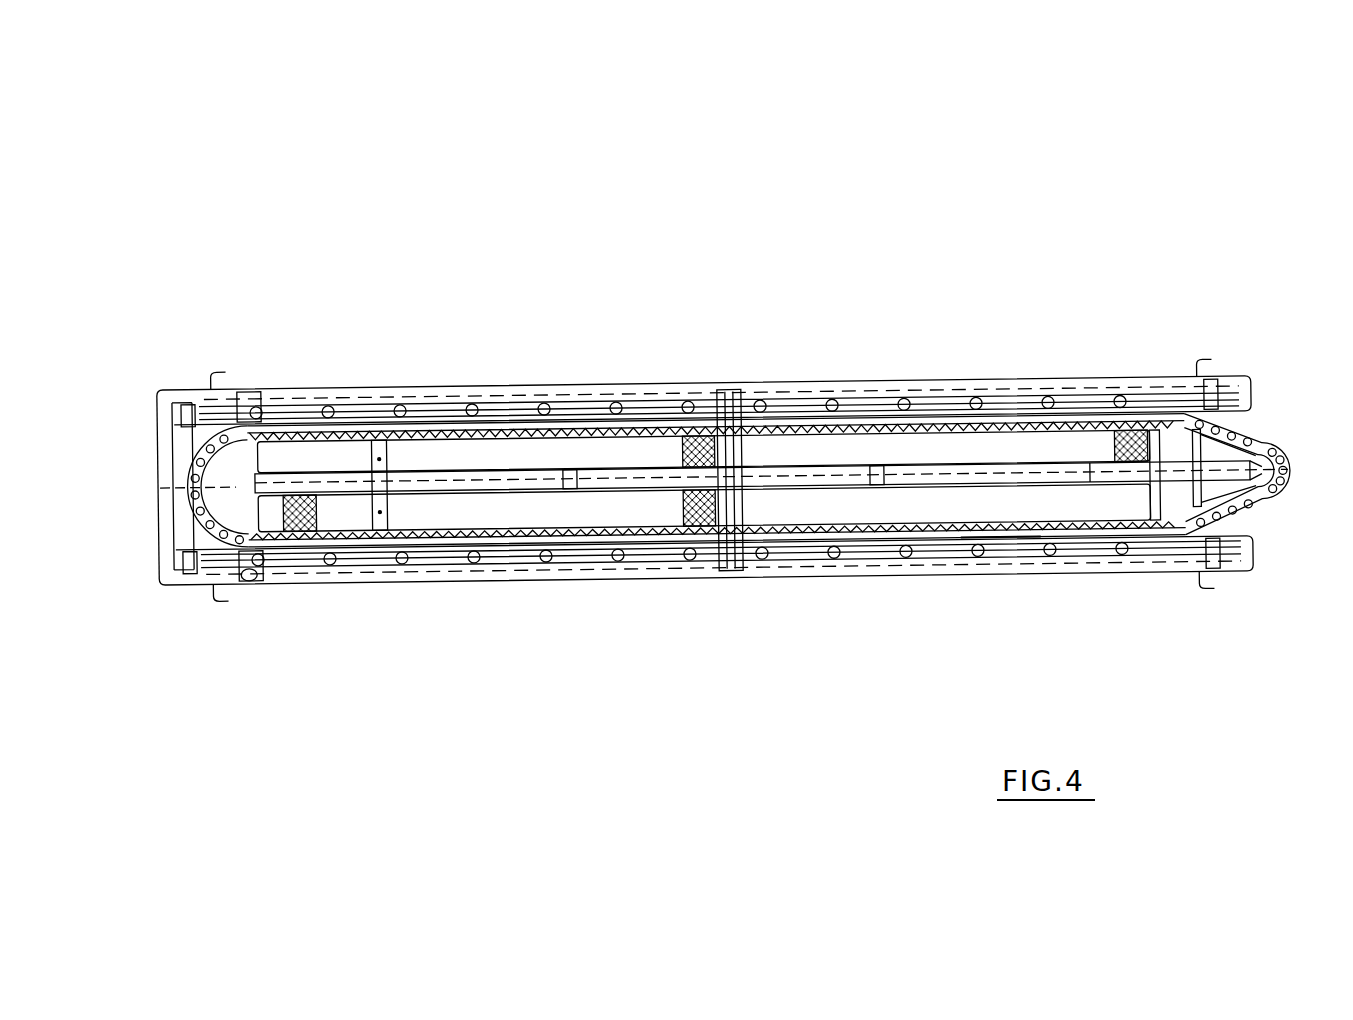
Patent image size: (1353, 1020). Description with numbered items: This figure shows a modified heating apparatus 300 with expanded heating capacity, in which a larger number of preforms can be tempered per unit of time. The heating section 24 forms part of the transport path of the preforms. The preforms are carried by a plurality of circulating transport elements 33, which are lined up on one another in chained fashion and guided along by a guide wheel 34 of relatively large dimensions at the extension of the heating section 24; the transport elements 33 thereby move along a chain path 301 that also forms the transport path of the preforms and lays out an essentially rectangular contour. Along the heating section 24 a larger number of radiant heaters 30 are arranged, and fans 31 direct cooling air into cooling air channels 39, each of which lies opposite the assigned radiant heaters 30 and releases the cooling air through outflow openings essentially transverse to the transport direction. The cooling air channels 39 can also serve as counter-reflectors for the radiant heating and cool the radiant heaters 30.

The heating apparatus 300 is at (538, 165).
The chain path 301 is at (995, 545).
The heating section 24 is at (861, 385).
The radiant heaters 30 is at (314, 396).
The fans 31 is at (724, 400).
The circulating transport elements 33 is at (245, 502).
The guide wheel 34 is at (1250, 473).
The cooling air channels 39 is at (603, 450).